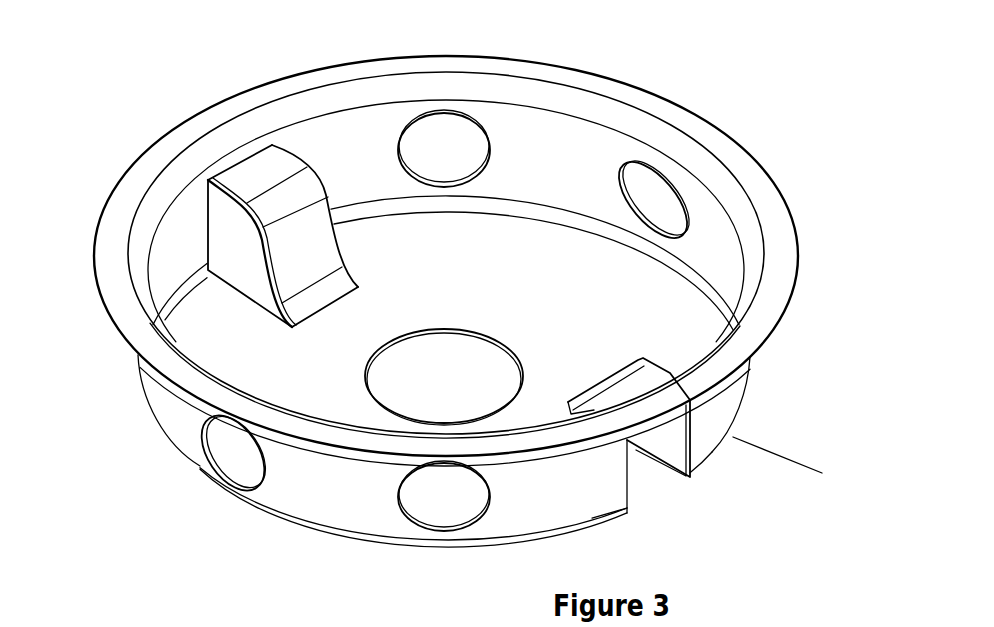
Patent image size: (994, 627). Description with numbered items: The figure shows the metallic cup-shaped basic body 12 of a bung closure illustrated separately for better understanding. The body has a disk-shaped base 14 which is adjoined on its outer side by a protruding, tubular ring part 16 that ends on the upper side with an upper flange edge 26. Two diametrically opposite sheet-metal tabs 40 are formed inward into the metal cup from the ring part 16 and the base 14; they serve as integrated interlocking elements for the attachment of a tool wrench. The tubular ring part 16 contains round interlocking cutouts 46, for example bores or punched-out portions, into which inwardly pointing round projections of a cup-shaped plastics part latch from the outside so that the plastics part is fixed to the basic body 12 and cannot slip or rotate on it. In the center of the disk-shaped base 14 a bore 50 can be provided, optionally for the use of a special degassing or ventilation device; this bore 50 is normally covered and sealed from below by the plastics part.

The metallic cup-shaped basic body 12 is at (512, 301).
The disk-shaped base 14 is at (643, 305).
The tubular ring part 16 is at (167, 263).
The upper flange edge 26 is at (650, 107).
The sheet-metal tabs 40 is at (240, 187).
The interlocking cutouts 46 is at (432, 143).
The bore 50 is at (413, 392).